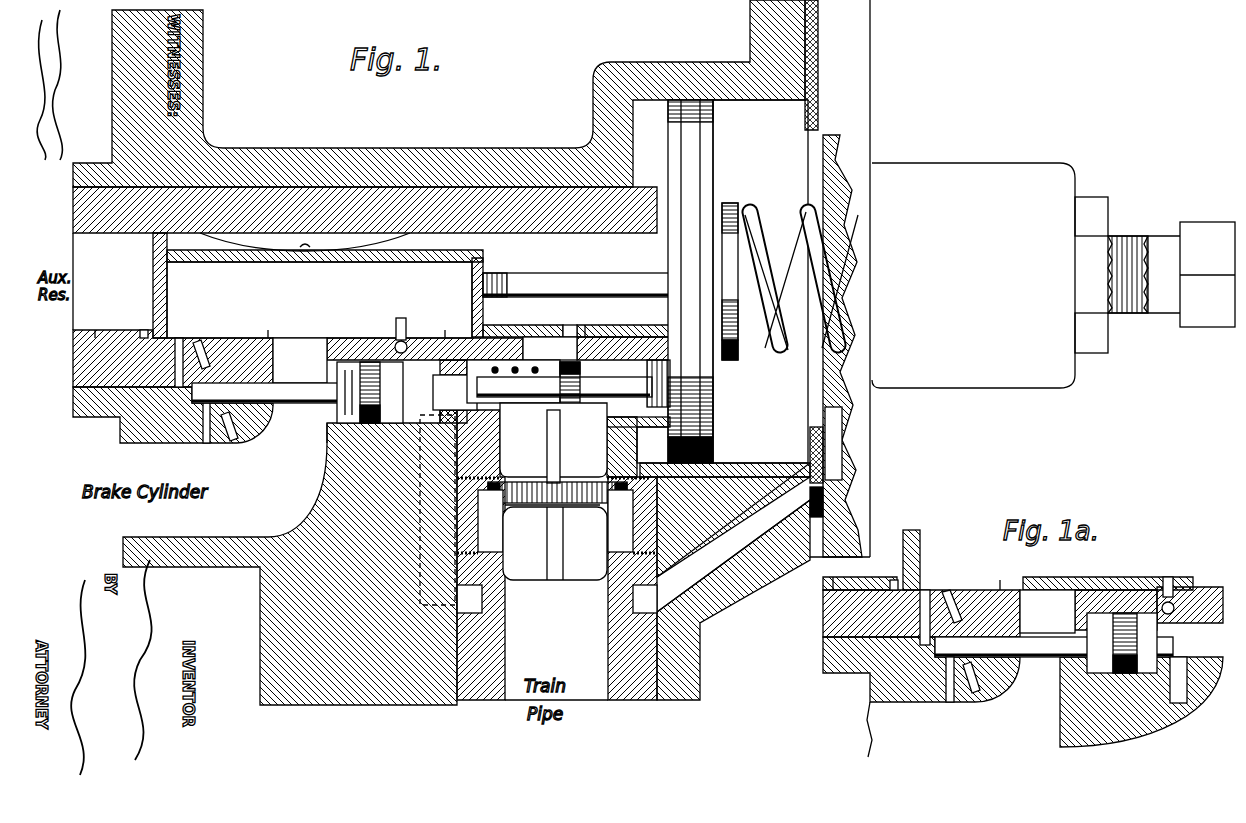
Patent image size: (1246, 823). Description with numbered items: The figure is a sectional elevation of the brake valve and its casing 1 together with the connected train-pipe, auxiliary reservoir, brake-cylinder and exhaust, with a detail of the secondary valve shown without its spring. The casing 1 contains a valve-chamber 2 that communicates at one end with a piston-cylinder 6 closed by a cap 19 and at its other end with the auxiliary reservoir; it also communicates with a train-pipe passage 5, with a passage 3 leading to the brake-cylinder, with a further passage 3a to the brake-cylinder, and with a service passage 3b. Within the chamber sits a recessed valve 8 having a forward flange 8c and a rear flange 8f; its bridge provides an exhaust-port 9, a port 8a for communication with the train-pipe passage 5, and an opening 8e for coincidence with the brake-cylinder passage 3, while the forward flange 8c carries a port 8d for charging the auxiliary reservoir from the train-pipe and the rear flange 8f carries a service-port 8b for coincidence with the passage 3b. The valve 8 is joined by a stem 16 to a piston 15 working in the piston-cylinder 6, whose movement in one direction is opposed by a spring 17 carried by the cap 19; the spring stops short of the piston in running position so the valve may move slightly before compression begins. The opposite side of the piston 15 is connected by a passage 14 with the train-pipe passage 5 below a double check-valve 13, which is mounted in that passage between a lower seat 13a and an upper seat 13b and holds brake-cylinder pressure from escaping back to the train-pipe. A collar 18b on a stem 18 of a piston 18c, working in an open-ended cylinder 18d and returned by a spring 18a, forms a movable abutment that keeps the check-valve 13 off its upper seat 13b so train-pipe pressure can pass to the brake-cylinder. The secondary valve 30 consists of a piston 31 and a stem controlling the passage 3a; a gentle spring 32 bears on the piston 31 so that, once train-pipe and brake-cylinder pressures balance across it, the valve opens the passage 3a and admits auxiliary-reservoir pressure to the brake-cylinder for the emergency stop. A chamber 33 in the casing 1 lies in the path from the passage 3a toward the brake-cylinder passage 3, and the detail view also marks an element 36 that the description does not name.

In FIG. 1, the casing 1 is at (435, 152).
In FIG. 1a, the casing 1 is at (1023, 667).
In FIG. 1, the valve-chamber 2 is at (322, 251).
In FIG. 1, the passage 3 is at (300, 360).
In FIG. 1a, the passage 3 is at (1047, 611).
In FIG. 1, the passage 3a is at (179, 338).
In FIG. 1a, the passage 3a is at (927, 590).
In FIG. 1, the passage 3b is at (204, 343).
In FIG. 1a, the passage 3b is at (952, 592).
In FIG. 1, the train-pipe passage 5 is at (557, 752).
In FIG. 1, the piston-cylinder 6 is at (760, 281).
In FIG. 1, the valve 8 is at (328, 262).
In FIG. 1a, the valve 8 is at (921, 548).
In FIG. 1, the port 8a is at (445, 330).
In FIG. 1, the service-port 8b is at (144, 330).
In FIG. 1a, the service-port 8b is at (893, 580).
In FIG. 1, the forward flange 8c is at (585, 325).
In FIG. 1, the port 8d is at (568, 325).
In FIG. 1, the opening 8e is at (268, 330).
In FIG. 1a, the opening 8e is at (1008, 578).
In FIG. 1, the rear flange 8f is at (95, 330).
In FIG. 1a, the rear flange 8f is at (844, 575).
In FIG. 1, the exhaust-port 9 is at (400, 327).
In FIG. 1a, the exhaust-port 9 is at (1169, 583).
In FIG. 1, the double check-valve 13 is at (572, 498).
In FIG. 1, the seat 13a is at (555, 543).
In FIG. 1, the upper seat 13b is at (508, 503).
In FIG. 1, the passage 14 is at (733, 537).
In FIG. 1, the piston 15 is at (690, 281).
In FIG. 1, the stem 16 is at (626, 276).
In FIG. 1, the spring 17 is at (775, 352).
In FIG. 1, the stem 18 is at (542, 390).
In FIG. 1, the spring 18a is at (535, 412).
In FIG. 1, the collar 18b is at (570, 412).
In FIG. 1, the piston 18c is at (660, 370).
In FIG. 1, the open-ended cylinder 18d is at (638, 413).
In FIG. 1, the cap 19 is at (862, 110).
In FIG. 1, the secondary valve 30 is at (277, 405).
In FIG. 1a, the secondary valve 30 is at (1020, 650).
In FIG. 1, the piston 31 is at (370, 392).
In FIG. 1a, the piston 31 is at (1122, 643).
In FIG. 1, the spring 32 is at (343, 439).
In FIG. 1, the chamber 33 is at (421, 510).
In FIG. 1a, the chamber 33 is at (1192, 691).
In FIG. 1a, the port 36 is at (985, 695).